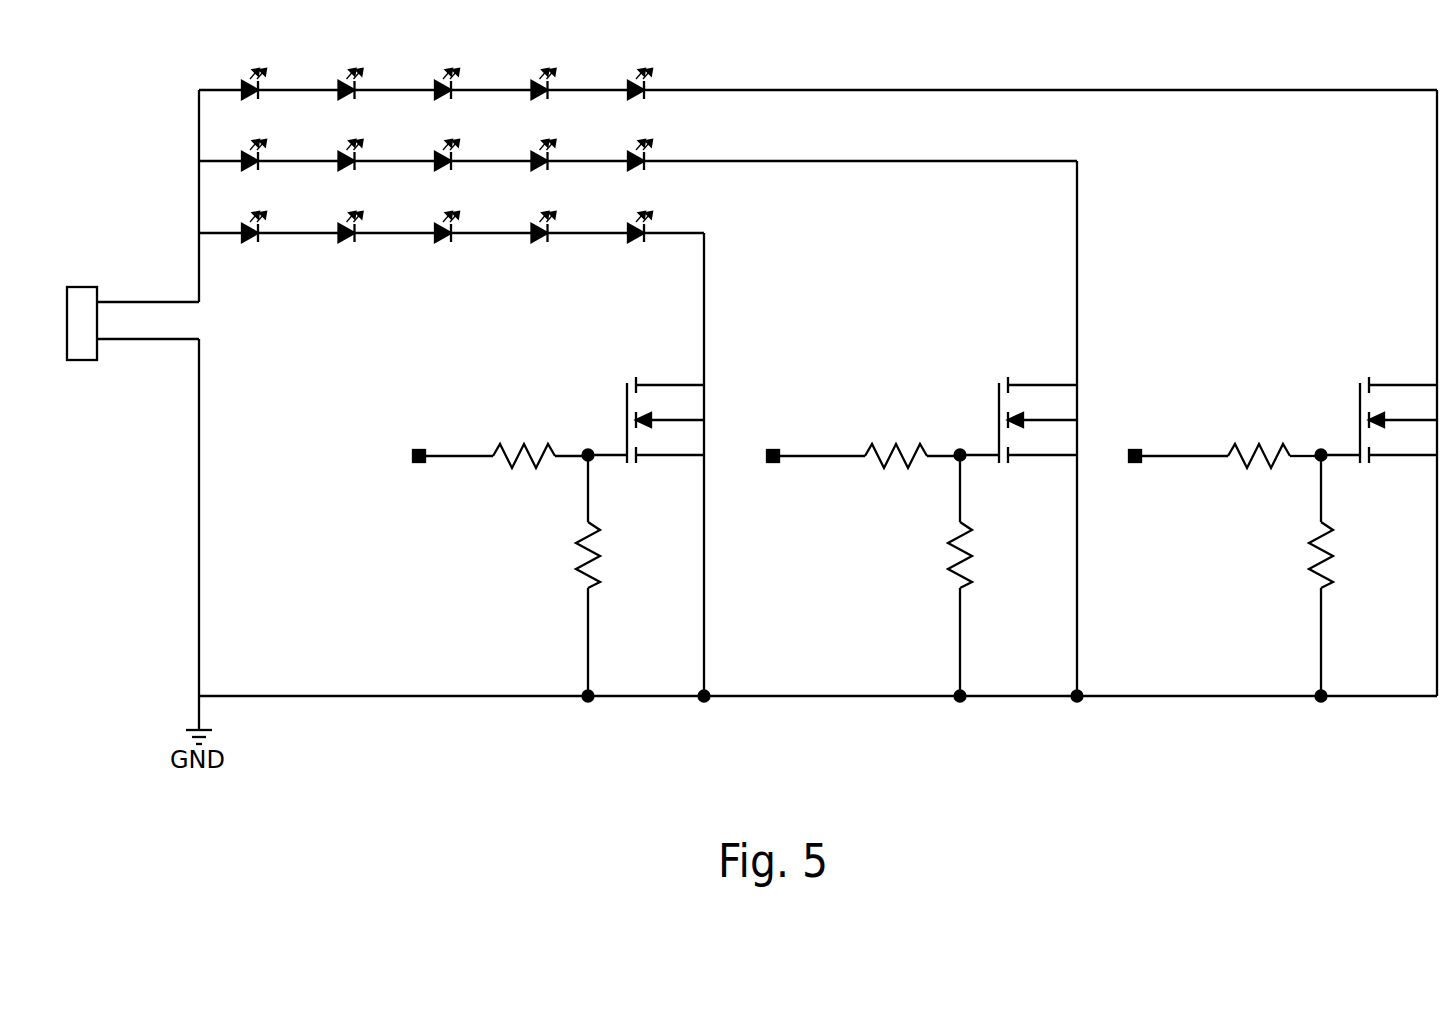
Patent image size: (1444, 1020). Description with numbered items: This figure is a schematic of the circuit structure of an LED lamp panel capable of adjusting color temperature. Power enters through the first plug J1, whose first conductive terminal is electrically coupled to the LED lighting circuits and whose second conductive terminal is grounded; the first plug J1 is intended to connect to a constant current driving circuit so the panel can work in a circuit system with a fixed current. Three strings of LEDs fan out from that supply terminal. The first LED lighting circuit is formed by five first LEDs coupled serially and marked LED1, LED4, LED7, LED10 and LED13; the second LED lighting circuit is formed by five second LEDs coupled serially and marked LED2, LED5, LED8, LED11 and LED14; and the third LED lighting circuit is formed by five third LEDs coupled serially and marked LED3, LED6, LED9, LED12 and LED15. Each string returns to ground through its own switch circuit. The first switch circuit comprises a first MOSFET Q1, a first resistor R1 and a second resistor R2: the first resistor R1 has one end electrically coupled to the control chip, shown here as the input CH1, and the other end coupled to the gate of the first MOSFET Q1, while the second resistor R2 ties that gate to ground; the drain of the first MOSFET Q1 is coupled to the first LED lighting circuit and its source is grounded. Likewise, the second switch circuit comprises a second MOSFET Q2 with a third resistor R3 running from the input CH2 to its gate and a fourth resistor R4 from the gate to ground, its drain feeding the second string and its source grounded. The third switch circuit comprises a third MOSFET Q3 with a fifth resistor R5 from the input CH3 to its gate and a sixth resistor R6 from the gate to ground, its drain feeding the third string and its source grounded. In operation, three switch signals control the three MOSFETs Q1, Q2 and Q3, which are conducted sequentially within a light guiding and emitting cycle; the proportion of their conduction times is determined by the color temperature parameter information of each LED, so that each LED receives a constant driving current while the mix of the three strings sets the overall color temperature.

The first plug J1 is at (132, 310).
The first LED LED1 is at (259, 69).
The second LED LED2 is at (259, 140).
The third LED LED3 is at (259, 212).
The first LED LED4 is at (356, 69).
The second LED LED5 is at (356, 140).
The third LED LED6 is at (356, 212).
The first LED LED7 is at (452, 69).
The second LED LED8 is at (452, 140).
The third LED LED9 is at (452, 212).
The first LED LED10 is at (555, 69).
The second LED LED11 is at (555, 140).
The third LED LED12 is at (555, 212).
The first LED LED13 is at (651, 69).
The second LED LED14 is at (651, 140).
The third LED LED15 is at (651, 212).
The first MOSFET Q1 is at (612, 385).
The second MOSFET Q2 is at (984, 385).
The third MOSFET Q3 is at (1345, 385).
The first resistor R1 is at (540, 441).
The second resistor R2 is at (609, 575).
The third resistor R3 is at (912, 441).
The fourth resistor R4 is at (981, 575).
The fifth resistor R5 is at (1274, 441).
The sixth resistor R6 is at (1340, 575).
The channel 1 control input CH1 is at (443, 438).
The channel 2 control input CH2 is at (806, 438).
The channel 3 control input CH3 is at (1169, 438).